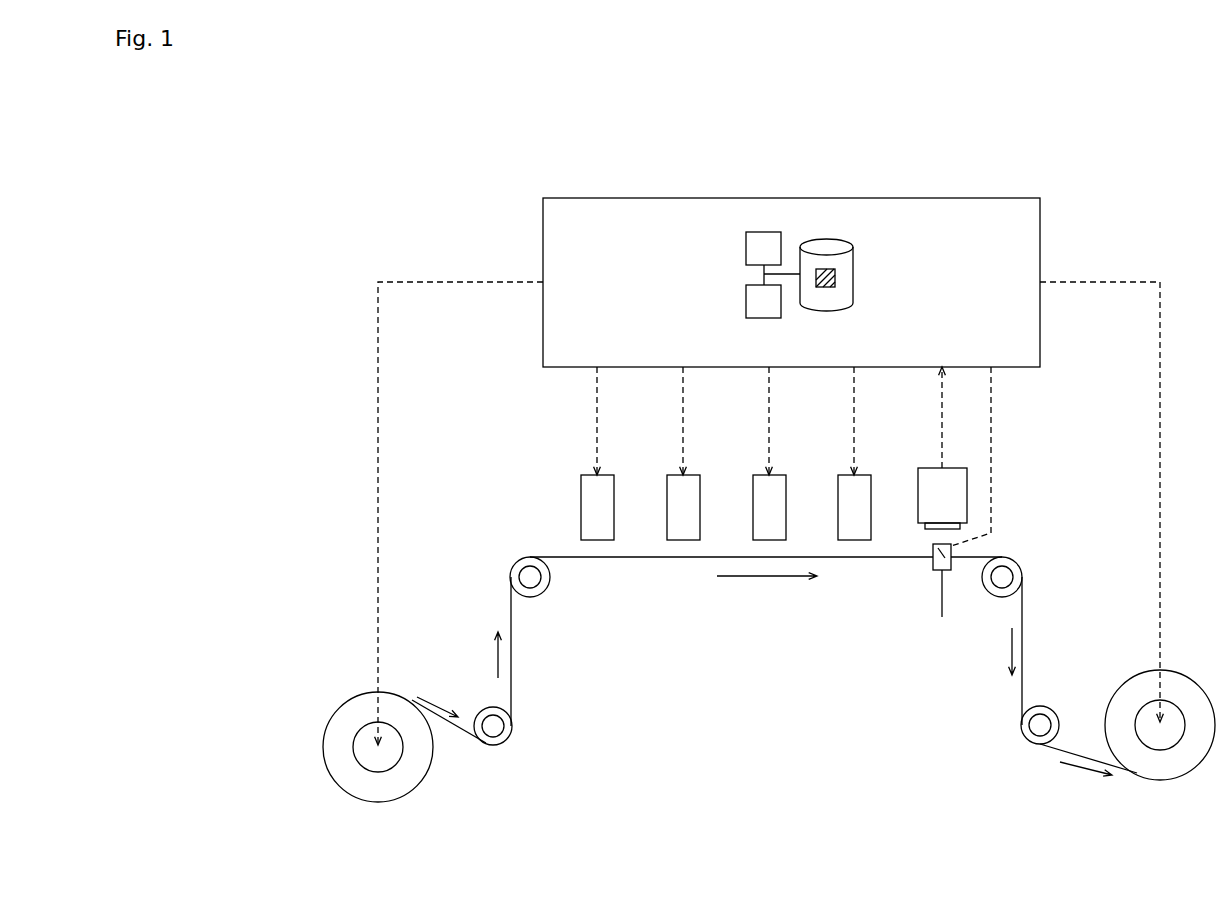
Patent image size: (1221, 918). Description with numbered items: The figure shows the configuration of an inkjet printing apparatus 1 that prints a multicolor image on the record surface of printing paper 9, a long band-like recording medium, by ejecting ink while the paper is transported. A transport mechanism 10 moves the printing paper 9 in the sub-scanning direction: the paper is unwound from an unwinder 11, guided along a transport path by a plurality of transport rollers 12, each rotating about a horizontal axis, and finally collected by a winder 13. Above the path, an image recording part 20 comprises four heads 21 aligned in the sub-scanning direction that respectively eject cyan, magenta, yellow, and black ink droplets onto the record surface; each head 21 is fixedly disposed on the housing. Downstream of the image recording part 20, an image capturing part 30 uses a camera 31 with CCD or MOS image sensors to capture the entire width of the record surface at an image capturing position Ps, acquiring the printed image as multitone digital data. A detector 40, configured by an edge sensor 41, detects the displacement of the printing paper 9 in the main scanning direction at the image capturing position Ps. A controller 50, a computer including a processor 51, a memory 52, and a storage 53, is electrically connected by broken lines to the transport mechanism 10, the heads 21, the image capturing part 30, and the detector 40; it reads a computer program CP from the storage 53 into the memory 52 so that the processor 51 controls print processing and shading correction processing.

The inkjet printing apparatus 1 is at (482, 227).
The printing paper 9 is at (1022, 640).
The transport mechanism 10 is at (449, 766).
The unwinder 11 is at (395, 748).
The transport roller 12 is at (515, 564).
The winder 13 is at (1145, 718).
The image recording part 20 is at (567, 508).
The head 21 is at (598, 491).
The image capturing part 30 is at (973, 460).
The camera 31 is at (933, 489).
The detector 40 is at (927, 568).
The edge sensor 41 is at (934, 546).
The controller 50 is at (975, 198).
The processor 51 is at (746, 247).
The memory 52 is at (746, 300).
The storage 53 is at (856, 288).
The computer program CP is at (823, 288).
The image capturing position Ps is at (940, 607).